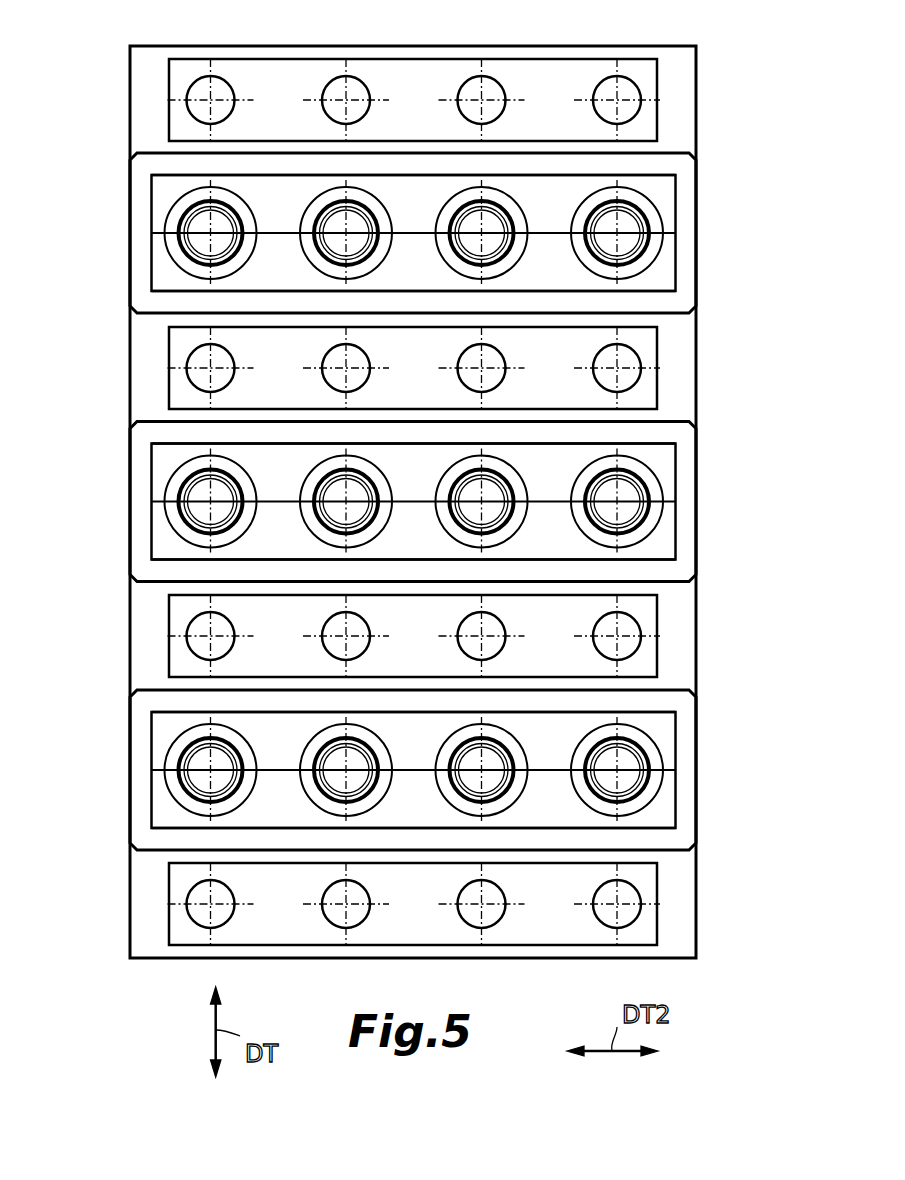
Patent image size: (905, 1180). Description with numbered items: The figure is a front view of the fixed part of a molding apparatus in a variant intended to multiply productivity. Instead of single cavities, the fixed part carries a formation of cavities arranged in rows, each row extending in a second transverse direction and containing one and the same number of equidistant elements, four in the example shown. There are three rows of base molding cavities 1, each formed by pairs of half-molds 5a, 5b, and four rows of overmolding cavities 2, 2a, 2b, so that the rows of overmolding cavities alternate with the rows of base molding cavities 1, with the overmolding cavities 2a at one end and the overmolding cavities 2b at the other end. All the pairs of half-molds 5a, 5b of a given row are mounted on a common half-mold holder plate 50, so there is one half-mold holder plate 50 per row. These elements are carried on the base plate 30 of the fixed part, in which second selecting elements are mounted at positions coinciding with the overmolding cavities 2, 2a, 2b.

The base molding cavity 1 is at (178, 223).
The overmolding cavity 2 is at (198, 362).
The overmolding cavity 2a is at (192, 97).
The overmolding cavity 2b is at (198, 897).
The base plate 30 is at (140, 255).
The half-mold holder plate 50 is at (687, 248).
The half-mold 5a is at (667, 203).
The half-mold 5b is at (667, 275).